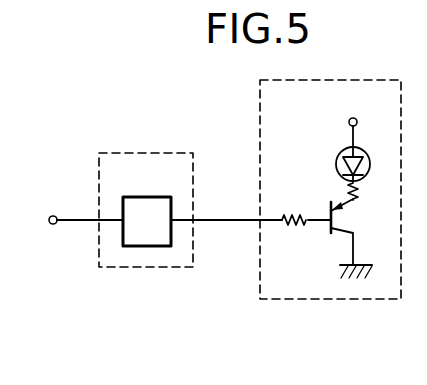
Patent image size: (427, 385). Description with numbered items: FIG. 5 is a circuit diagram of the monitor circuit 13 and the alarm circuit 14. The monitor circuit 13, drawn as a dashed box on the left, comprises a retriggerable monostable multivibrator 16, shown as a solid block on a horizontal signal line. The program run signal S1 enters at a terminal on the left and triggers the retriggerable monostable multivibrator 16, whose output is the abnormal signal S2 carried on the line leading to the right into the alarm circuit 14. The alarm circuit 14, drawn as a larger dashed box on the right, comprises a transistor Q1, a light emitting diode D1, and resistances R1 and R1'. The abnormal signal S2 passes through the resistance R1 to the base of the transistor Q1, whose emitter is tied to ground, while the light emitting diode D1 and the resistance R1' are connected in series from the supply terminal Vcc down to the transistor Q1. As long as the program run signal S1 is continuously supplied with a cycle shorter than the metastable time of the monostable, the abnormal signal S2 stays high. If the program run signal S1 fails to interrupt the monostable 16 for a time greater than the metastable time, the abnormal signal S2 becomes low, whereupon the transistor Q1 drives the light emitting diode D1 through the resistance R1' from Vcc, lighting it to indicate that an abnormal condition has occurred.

The monitor circuit 13 is at (158, 153).
The alarm circuit 14 is at (302, 300).
The retriggerable monostable multivibrator 16 is at (138, 197).
The program run signal S1 is at (57, 213).
The abnormal signal S2 is at (228, 217).
The resistance R1 is at (306, 196).
The resistance R1' is at (374, 188).
The transistor Q1 is at (344, 221).
The light emitting diode D1 is at (337, 157).
The supply voltage terminal Vcc is at (362, 121).